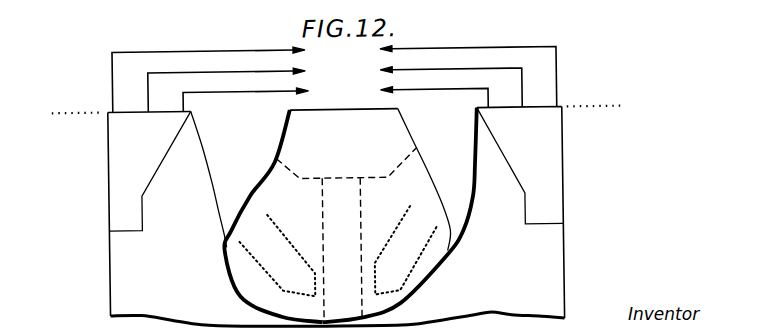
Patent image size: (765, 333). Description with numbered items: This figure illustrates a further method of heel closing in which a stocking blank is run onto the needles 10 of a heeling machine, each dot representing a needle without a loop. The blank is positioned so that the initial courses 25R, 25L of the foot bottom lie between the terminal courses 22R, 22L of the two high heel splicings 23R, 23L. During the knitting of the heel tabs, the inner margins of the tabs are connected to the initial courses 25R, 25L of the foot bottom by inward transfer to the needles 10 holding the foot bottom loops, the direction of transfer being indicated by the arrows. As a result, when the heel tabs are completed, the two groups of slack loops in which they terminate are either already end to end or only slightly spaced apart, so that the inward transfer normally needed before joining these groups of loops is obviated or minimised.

The needles 10 is at (338, 218).
The terminal course of left high heel splicing 22L is at (179, 108).
The terminal course of right high heel splicing 22R is at (544, 108).
The left high heel splicing 23L is at (130, 161).
The right high heel splicing 23R is at (544, 164).
The initial course of foot bottom (left) 25L is at (248, 110).
The initial course of foot bottom (right) 25R is at (444, 110).